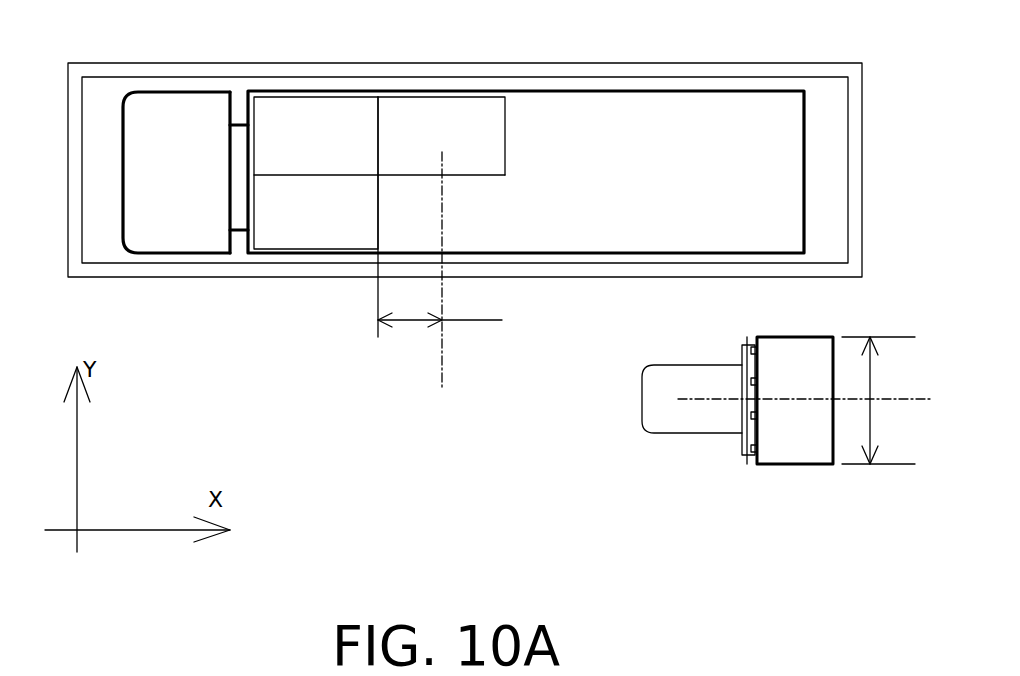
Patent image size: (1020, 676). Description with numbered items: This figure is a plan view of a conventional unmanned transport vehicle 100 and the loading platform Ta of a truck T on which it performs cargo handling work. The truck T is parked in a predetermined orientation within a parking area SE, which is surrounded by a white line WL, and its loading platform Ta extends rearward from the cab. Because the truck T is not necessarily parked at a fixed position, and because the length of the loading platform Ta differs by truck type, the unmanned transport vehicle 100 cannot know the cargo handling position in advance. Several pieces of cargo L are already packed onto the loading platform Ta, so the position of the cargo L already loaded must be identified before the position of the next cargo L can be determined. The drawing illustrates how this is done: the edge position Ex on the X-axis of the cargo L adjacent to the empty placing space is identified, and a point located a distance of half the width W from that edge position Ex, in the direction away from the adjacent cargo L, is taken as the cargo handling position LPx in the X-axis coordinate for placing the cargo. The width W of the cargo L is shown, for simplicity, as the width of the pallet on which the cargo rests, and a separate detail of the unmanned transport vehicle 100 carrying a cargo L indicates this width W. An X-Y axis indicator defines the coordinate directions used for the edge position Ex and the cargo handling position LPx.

The white line WL is at (610, 73).
The parking area SE is at (841, 171).
The loading platform Ta is at (601, 185).
The truck T is at (181, 118).
The cargo L is at (433, 120).
The edge position Ex is at (376, 310).
The cargo handling position LPx is at (433, 288).
The width W is at (878, 400).
The unmanned transport vehicle 100 is at (683, 483).